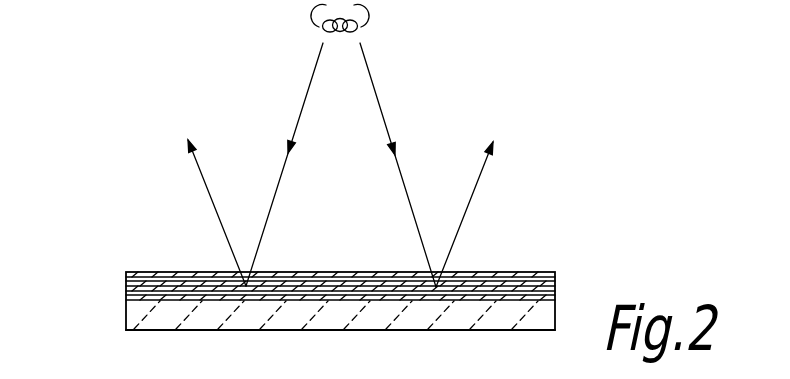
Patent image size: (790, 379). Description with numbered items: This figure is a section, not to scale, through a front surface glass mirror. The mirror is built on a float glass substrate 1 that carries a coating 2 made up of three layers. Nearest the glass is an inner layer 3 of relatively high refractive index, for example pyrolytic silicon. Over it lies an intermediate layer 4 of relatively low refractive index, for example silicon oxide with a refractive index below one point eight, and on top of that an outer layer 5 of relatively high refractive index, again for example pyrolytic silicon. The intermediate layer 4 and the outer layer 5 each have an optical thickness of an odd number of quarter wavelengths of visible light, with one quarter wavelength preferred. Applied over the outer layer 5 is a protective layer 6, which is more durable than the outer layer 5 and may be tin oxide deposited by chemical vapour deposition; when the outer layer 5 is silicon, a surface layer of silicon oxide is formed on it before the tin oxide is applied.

The float glass substrate 1 is at (200, 318).
The coating 2 is at (122, 282).
The inner layer 3 is at (315, 297).
The intermediate layer 4 is at (348, 290).
The outer layer 5 is at (380, 288).
The protective layer 6 is at (510, 274).